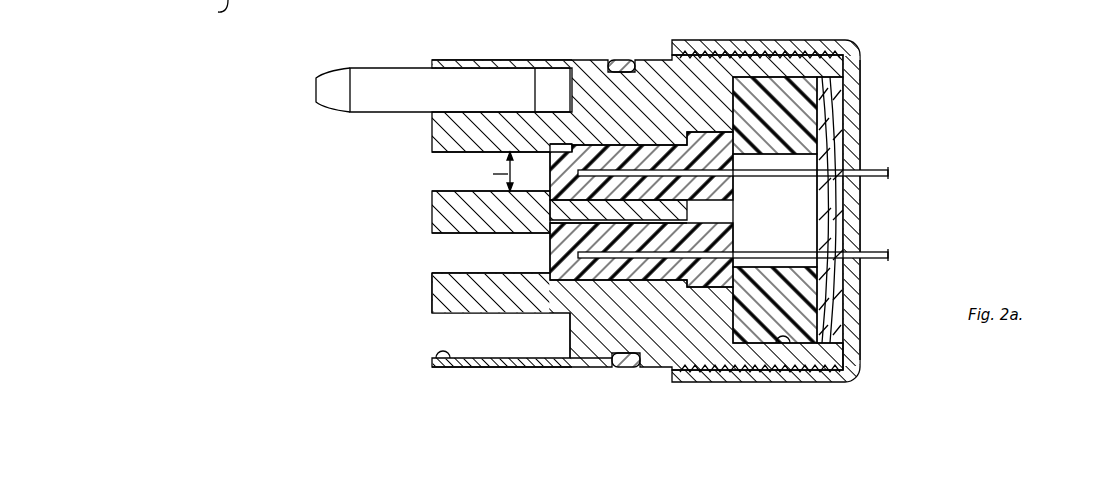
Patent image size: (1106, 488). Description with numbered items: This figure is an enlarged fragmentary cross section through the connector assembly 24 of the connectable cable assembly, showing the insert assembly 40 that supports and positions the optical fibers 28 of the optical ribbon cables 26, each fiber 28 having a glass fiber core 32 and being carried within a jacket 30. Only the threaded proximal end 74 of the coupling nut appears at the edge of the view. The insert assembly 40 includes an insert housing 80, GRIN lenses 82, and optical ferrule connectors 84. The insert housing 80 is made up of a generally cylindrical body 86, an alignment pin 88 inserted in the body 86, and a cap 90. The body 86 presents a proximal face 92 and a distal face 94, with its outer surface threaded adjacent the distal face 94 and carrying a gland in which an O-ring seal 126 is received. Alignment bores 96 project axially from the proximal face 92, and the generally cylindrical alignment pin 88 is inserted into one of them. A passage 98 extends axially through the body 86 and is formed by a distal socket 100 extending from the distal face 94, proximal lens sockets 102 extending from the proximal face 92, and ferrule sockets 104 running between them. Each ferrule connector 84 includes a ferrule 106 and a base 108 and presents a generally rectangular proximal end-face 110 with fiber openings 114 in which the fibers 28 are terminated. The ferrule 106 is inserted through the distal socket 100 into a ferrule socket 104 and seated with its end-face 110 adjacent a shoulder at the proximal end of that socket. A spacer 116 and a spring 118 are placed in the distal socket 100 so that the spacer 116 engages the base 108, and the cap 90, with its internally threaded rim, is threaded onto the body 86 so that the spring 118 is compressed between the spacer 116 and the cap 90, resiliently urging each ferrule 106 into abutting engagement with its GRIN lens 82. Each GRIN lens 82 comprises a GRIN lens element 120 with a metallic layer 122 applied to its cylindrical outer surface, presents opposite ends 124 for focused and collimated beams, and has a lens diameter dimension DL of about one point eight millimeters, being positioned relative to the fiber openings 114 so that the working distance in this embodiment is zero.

The connector assembly 24 is at (310, 321).
The optical ribbon cable 26 is at (767, 198).
The jacket 30 is at (880, 167).
The optical fiber 28 is at (605, 91).
The glass fiber core 32 is at (577, 155).
The insert assembly 40 is at (804, 219).
The threaded proximal end 74 is at (210, 12).
The insert housing 80 is at (575, 219).
The GRIN lens 82 is at (440, 250).
The optical ferrule connector 84 is at (672, 282).
The body 86 is at (575, 219).
The alignment pin 88 is at (383, 80).
The cap 90 is at (857, 83).
The proximal face 92 is at (432, 300).
The distal face 94 is at (843, 356).
The alignment bore 96 is at (455, 72).
The passage 98 is at (785, 231).
The distal socket 100 is at (783, 343).
The proximal lens socket 102 is at (432, 155).
The ferrule socket 104 is at (553, 212).
The ferrule 106 is at (590, 317).
The base 108 is at (712, 143).
The proximal end-face 110 is at (545, 158).
The fiber opening 114 is at (557, 153).
The spacer 116 is at (797, 87).
The spring 118 is at (832, 208).
The GRIN lens element 120 is at (447, 262).
The metallic layer 122 is at (447, 180).
The lens end 124 is at (575, 237).
The O-ring seal 126 is at (625, 63).